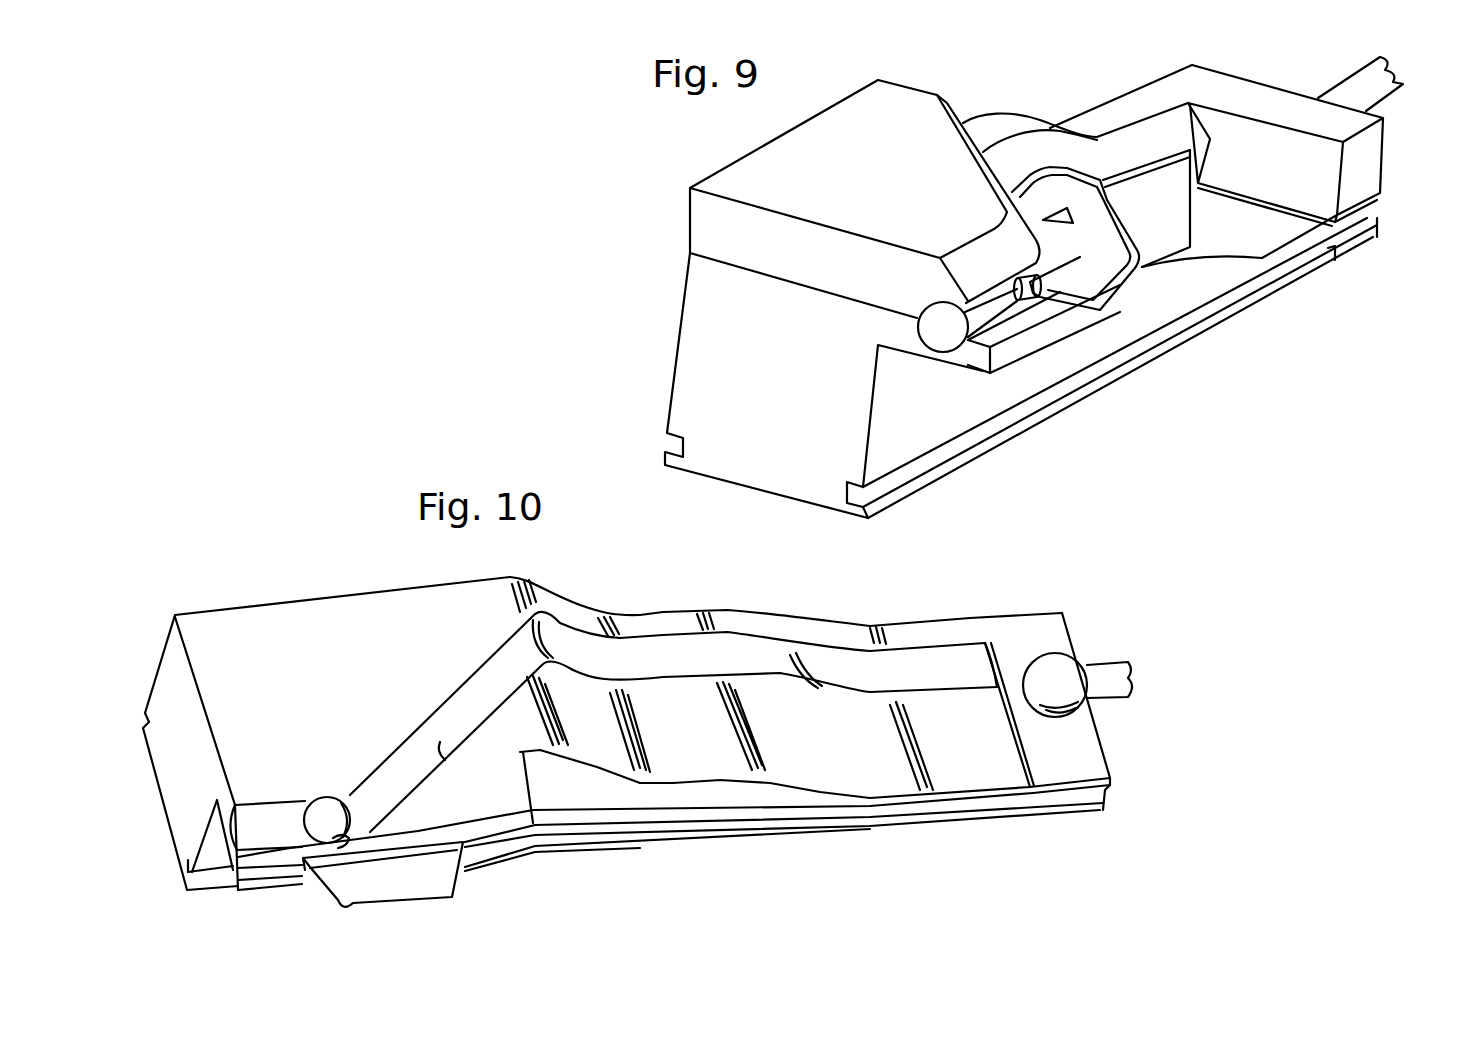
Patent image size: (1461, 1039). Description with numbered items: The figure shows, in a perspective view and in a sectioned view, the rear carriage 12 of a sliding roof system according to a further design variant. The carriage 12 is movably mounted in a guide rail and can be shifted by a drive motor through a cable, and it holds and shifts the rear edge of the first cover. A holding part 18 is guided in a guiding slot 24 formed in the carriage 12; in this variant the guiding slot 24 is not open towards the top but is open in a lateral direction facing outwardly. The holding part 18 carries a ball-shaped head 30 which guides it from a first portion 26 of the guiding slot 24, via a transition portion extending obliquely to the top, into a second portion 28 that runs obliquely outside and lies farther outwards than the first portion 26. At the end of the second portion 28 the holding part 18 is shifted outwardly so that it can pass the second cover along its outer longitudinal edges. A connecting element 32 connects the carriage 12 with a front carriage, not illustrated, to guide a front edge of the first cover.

In FIG. 9, the carriage 12 is at (912, 437).
In FIG. 10, the carriage 12 is at (713, 790).
In FIG. 9, the holding part 18 is at (1140, 177).
In FIG. 10, the holding part 18 is at (442, 884).
In FIG. 9, the guiding slot 24 is at (1050, 197).
In FIG. 10, the guiding slot 24 is at (723, 650).
In FIG. 9, the first portion 26 is at (1200, 183).
In FIG. 10, the first portion 26 is at (963, 667).
In FIG. 9, the second portion 28 is at (950, 343).
In FIG. 10, the second portion 28 is at (265, 832).
In FIG. 9, the ball-shaped head 30 is at (1020, 330).
In FIG. 10, the ball-shaped head 30 is at (327, 810).
In FIG. 9, the connecting element 32 is at (1378, 90).
In FIG. 10, the connecting element 32 is at (1117, 675).